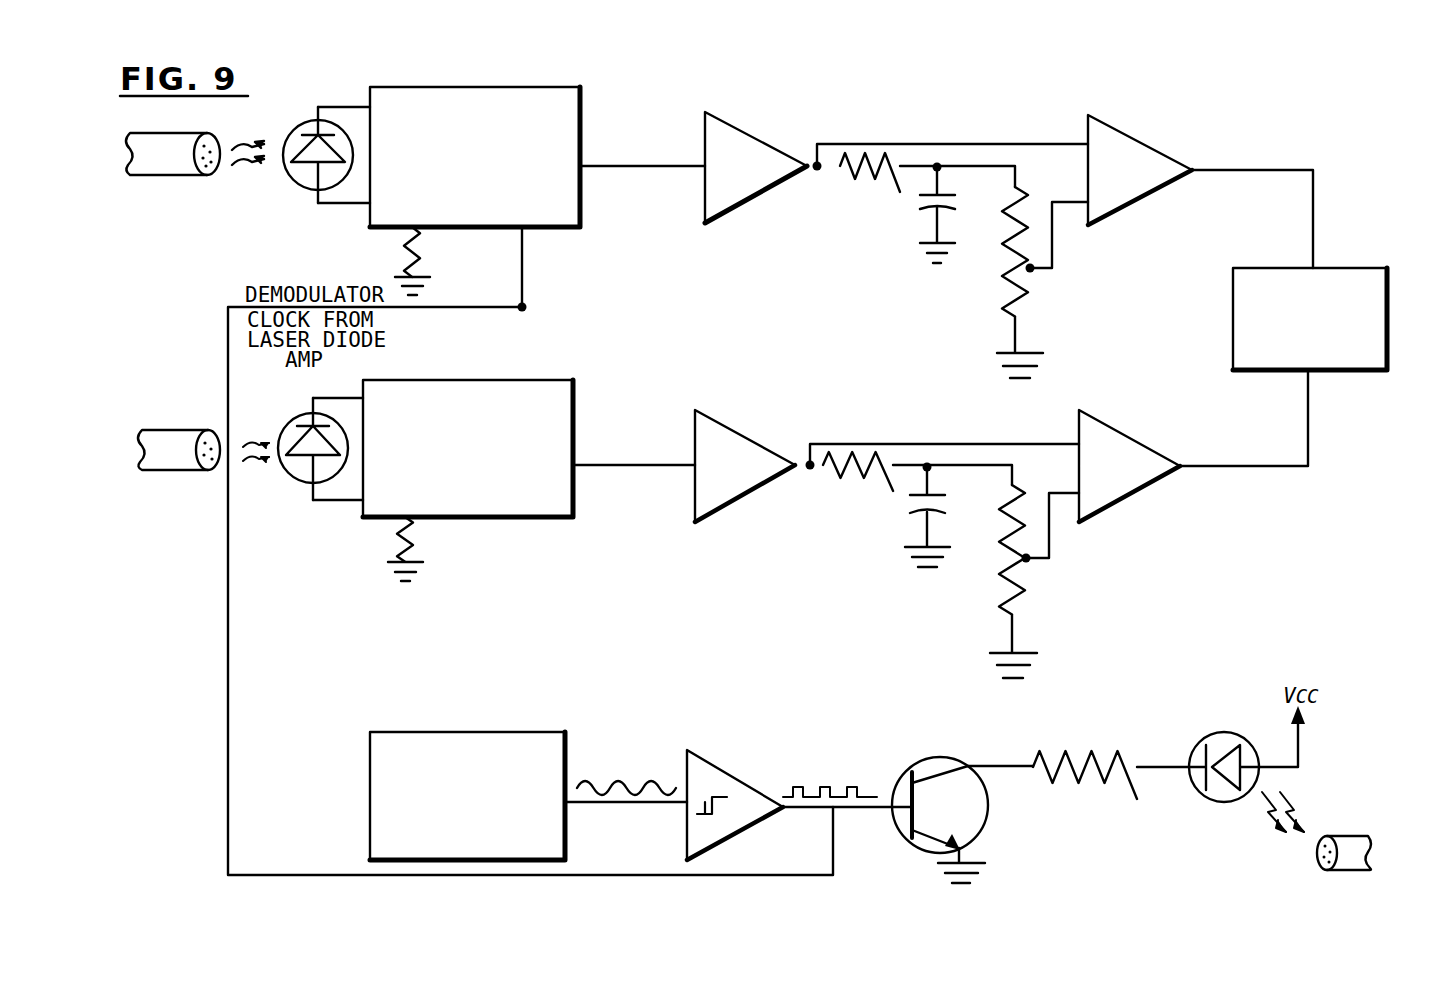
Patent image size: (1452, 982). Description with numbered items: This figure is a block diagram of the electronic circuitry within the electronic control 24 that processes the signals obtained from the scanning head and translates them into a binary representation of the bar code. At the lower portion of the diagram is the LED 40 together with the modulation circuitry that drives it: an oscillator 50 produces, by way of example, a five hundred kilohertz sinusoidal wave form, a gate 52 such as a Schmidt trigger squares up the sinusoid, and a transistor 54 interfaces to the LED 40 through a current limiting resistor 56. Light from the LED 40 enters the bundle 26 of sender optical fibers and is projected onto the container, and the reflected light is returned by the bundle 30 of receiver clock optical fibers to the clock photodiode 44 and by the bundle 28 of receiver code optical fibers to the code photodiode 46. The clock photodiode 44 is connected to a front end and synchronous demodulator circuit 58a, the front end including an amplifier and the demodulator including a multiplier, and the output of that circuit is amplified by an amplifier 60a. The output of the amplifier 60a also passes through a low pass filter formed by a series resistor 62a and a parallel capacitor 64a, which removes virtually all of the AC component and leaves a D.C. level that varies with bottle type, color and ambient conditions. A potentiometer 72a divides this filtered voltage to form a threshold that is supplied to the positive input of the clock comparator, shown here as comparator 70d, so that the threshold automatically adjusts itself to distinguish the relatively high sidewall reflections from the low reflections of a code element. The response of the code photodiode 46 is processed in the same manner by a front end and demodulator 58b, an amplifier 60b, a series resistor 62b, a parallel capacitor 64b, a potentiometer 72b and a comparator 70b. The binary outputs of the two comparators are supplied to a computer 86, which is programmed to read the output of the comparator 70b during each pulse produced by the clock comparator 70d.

The electronic control 24 is at (948, 124).
The bundle of sender optical fibers 26 is at (1354, 836).
The bundle of receiver code optical fibers 28 is at (169, 177).
The bundle of receiver clock optical fibers 30 is at (173, 428).
The LED 40 is at (1200, 732).
The clock photodiode 44 is at (281, 429).
The code photodiode 46 is at (304, 123).
The oscillator 50 is at (510, 730).
The gate 52 is at (734, 770).
The transistor 54 is at (923, 759).
The current limiting resistor 56 is at (1063, 758).
The front end and synchronous demodulator circuit 58a is at (578, 405).
The front end and demodulator 58b is at (587, 104).
The amplifier 60a is at (734, 429).
The amplifier 60b is at (755, 137).
The series resistor 62a is at (852, 456).
The series resistor 62b is at (854, 159).
The parallel capacitor 64a is at (908, 506).
The parallel capacitor 64b is at (920, 205).
The comparator 70b is at (1152, 148).
The comparator (clock) 70d is at (1108, 422).
The potentiometer 72a is at (984, 566).
The potentiometer 72b is at (989, 265).
The computer 86 is at (1343, 268).